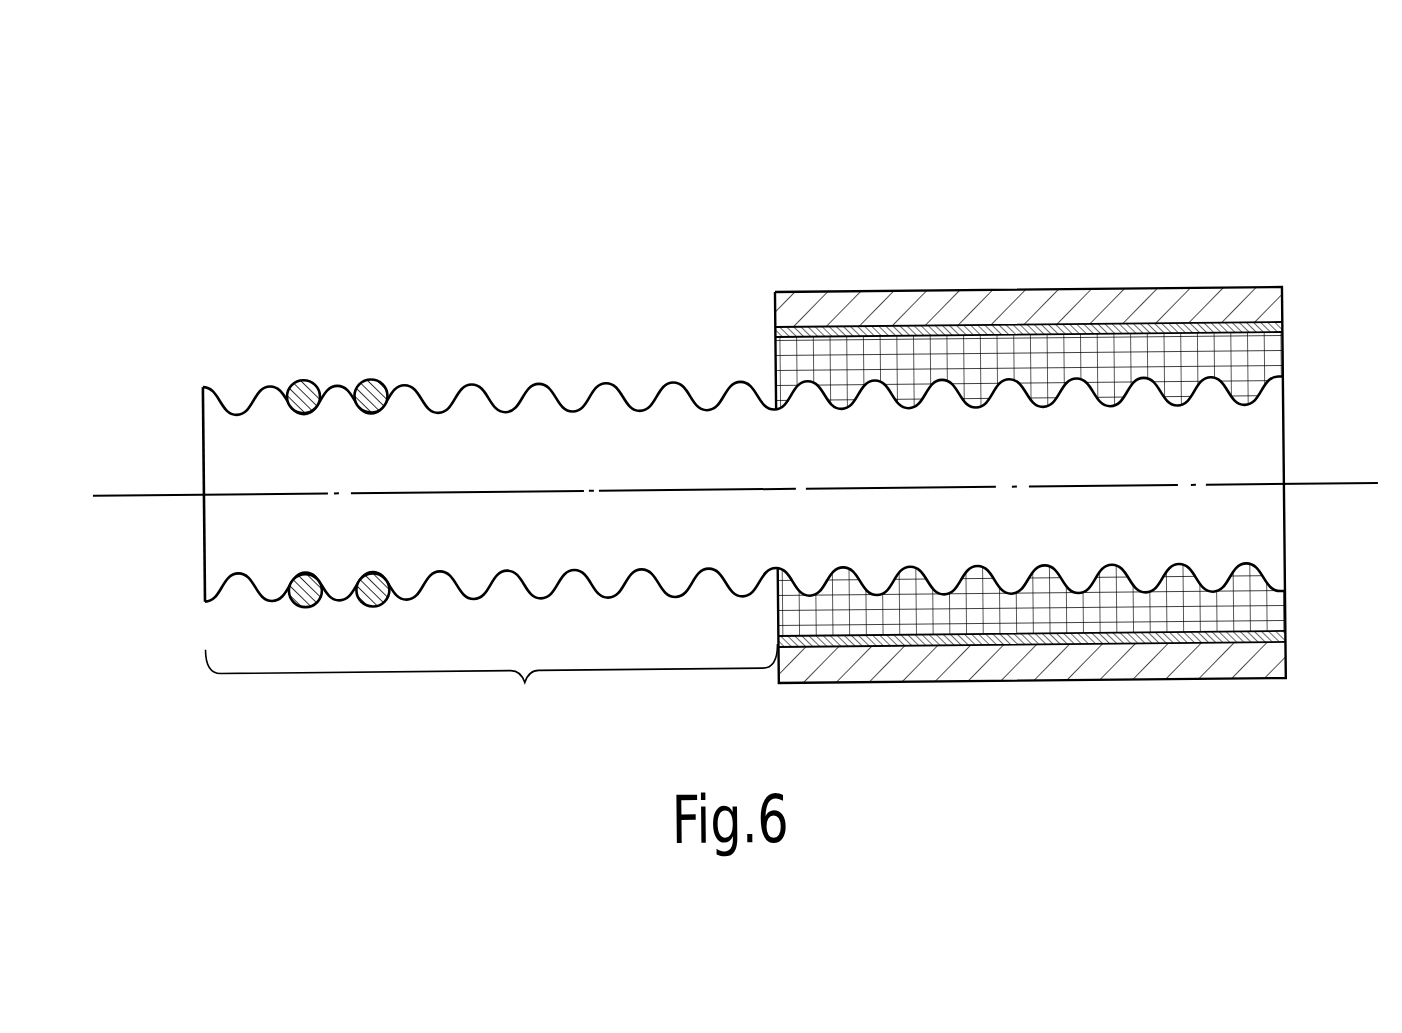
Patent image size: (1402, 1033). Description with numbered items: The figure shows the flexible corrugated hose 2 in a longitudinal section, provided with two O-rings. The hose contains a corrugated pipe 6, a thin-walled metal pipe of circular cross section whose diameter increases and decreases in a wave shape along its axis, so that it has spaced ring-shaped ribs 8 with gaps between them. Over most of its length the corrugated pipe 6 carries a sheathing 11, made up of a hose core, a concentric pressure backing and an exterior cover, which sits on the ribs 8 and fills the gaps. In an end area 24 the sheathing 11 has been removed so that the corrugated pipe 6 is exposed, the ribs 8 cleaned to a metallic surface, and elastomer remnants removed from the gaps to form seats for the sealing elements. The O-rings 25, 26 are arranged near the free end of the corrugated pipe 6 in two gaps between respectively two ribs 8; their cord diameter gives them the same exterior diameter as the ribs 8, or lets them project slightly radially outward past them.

The flexible corrugated hose 2 is at (884, 203).
The corrugated pipe 6 is at (225, 569).
The ring-shaped ribs 8 is at (262, 375).
The sheathing 11 is at (978, 292).
The end area 24 is at (491, 690).
The O-ring 25 is at (303, 377).
The O-ring 26 is at (373, 378).